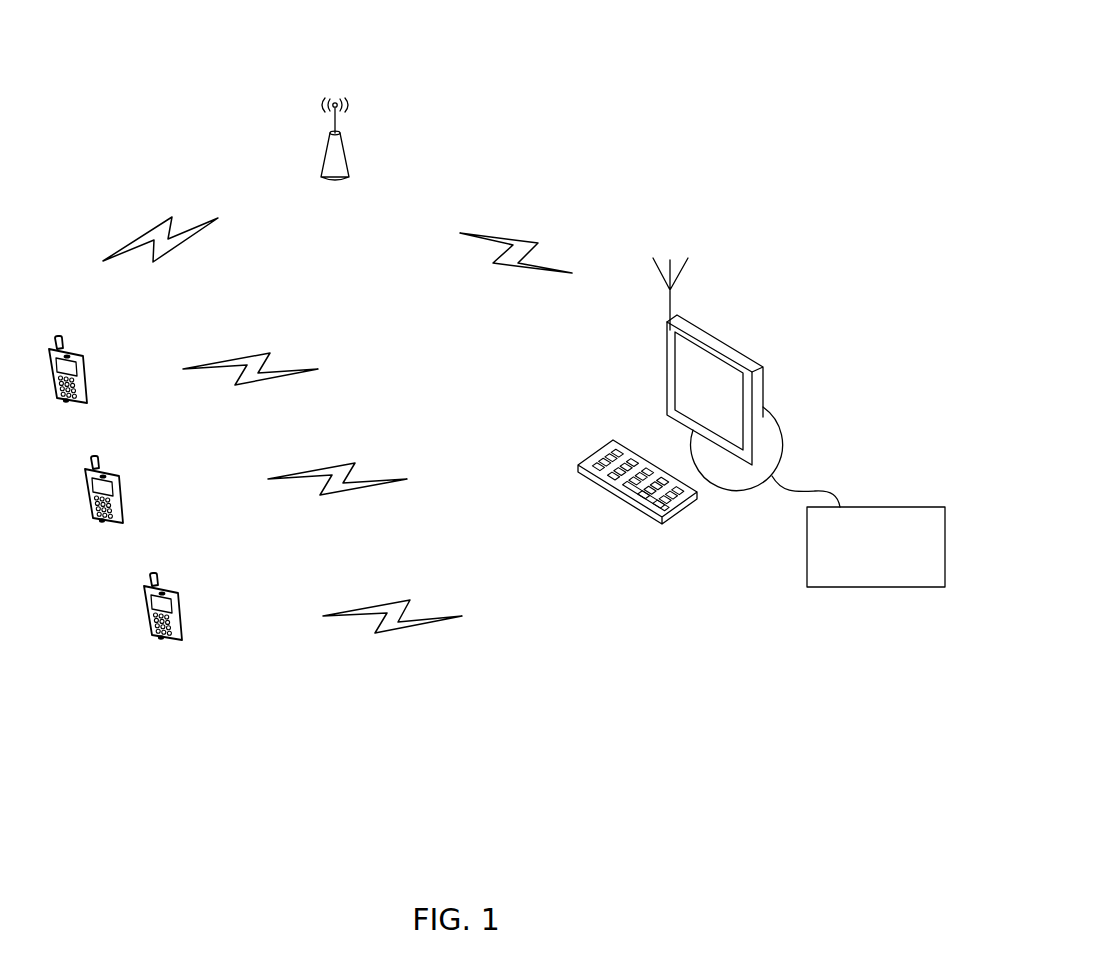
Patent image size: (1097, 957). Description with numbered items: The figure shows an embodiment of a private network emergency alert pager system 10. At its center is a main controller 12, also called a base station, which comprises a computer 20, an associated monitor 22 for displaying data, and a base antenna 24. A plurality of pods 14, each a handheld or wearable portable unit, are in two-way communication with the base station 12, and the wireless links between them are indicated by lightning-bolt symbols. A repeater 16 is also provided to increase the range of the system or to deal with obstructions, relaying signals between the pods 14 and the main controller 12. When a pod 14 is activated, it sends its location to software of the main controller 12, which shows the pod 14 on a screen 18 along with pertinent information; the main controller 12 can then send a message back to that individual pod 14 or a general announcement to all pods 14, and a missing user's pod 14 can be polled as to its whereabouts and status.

The private network emergency alert pager system 10 is at (708, 68).
The main controller 12 is at (729, 426).
The pod 14 is at (88, 367).
The repeater 16 is at (348, 158).
The screen 18 is at (688, 395).
The computer 20 is at (661, 403).
The monitor 22 is at (763, 377).
The base antenna 24 is at (670, 303).